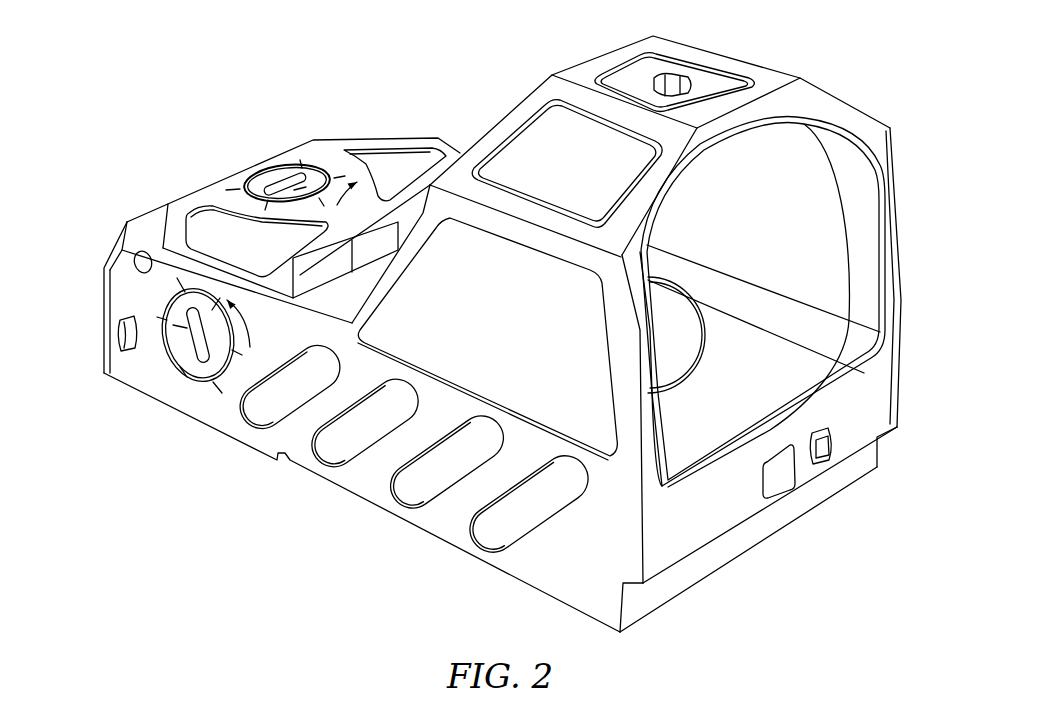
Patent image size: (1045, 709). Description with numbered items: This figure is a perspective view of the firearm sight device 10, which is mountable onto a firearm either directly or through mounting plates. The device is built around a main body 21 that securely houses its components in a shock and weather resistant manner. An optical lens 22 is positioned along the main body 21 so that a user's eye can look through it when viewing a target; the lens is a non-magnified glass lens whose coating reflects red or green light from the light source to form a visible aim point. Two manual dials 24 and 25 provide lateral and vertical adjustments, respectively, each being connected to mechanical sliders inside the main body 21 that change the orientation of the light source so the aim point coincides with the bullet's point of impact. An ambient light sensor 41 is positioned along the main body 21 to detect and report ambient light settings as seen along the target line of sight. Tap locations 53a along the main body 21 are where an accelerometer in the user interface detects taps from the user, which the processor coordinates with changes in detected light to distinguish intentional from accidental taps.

The firearm sight device 10 is at (173, 82).
The main body 21 is at (844, 78).
The optical lens 22 is at (833, 242).
The manual dial 24 is at (207, 373).
The manual dial 25 is at (283, 166).
The ambient light sensor 41 is at (780, 487).
The tap locations 53a is at (118, 330).